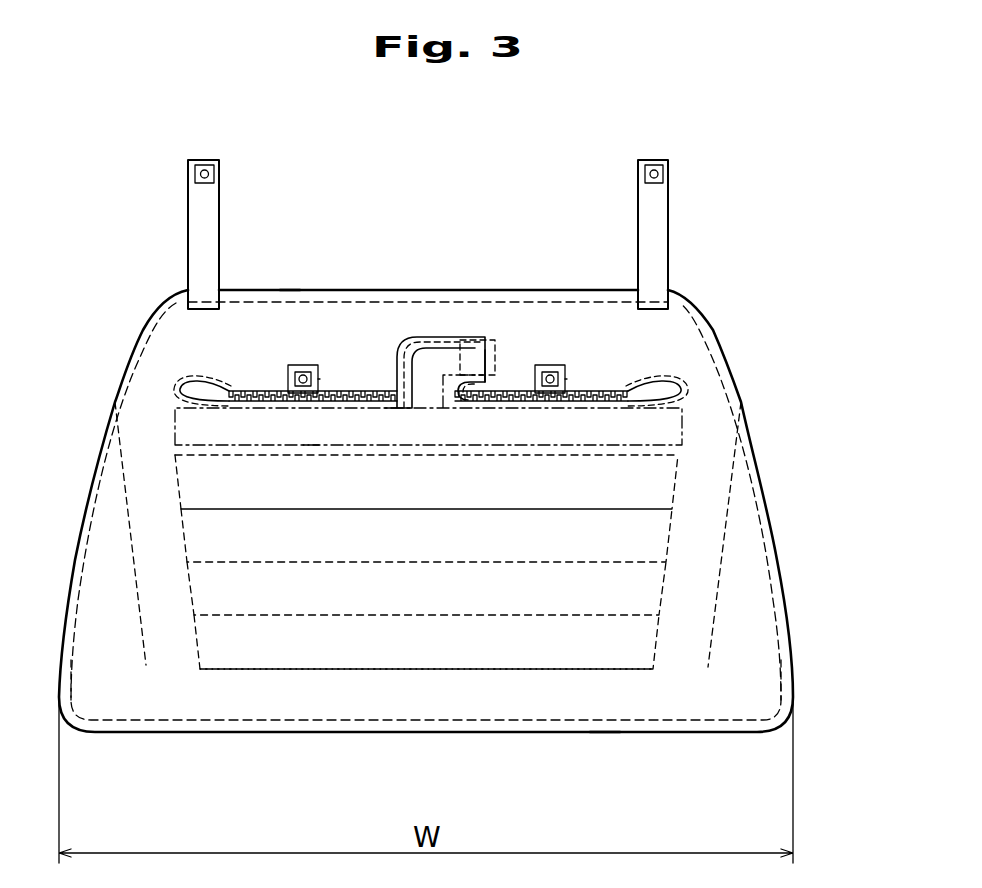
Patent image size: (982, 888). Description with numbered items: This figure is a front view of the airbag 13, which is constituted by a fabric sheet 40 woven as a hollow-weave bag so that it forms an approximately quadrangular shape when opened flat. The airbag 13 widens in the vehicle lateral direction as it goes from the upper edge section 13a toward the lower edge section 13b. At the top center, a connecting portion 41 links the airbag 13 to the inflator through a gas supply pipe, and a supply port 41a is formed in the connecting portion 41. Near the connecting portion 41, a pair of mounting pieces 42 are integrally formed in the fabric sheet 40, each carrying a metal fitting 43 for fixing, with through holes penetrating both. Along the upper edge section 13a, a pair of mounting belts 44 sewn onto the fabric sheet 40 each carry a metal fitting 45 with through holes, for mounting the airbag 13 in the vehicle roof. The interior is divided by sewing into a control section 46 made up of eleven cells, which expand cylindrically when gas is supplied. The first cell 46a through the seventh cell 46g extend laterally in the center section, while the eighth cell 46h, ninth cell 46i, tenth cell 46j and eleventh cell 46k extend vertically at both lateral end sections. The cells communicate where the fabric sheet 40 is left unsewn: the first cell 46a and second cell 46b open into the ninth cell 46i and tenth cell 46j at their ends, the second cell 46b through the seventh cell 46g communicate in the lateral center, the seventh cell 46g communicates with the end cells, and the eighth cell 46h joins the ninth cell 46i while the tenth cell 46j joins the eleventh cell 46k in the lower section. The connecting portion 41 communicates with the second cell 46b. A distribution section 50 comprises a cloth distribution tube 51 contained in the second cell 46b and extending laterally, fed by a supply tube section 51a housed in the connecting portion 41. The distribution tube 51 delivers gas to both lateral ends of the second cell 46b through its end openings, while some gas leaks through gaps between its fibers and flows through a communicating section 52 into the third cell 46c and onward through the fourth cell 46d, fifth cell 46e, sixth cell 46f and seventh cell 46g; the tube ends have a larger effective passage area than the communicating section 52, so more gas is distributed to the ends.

The airbag 13 is at (746, 275).
The upper edge section 13a is at (293, 288).
The lower edge section 13b is at (605, 733).
The fabric sheet 40 is at (720, 352).
The connecting portion 41 is at (406, 337).
The supply port 41a is at (496, 345).
The mounting piece 42 is at (305, 365).
The metal fitting 43 is at (318, 378).
The mounting belt 44 is at (188, 222).
The metal fitting 45 is at (214, 172).
The control section 46 is at (807, 599).
The first cell 46a is at (258, 362).
The second cell 46b is at (675, 427).
The third cell 46c is at (550, 497).
The fourth cell 46d is at (550, 550).
The fifth cell 46e is at (550, 603).
The sixth cell 46f is at (550, 657).
The seventh cell 46g is at (550, 710).
The eighth cell 46h is at (131, 679).
The ninth cell 46i is at (150, 495).
The tenth cell 46j is at (703, 525).
The eleventh cell 46k is at (773, 679).
The distribution section 50 is at (118, 312).
The distribution tube 51 is at (303, 446).
The supply tube section 51a is at (455, 340).
The communicating section 52 is at (428, 456).